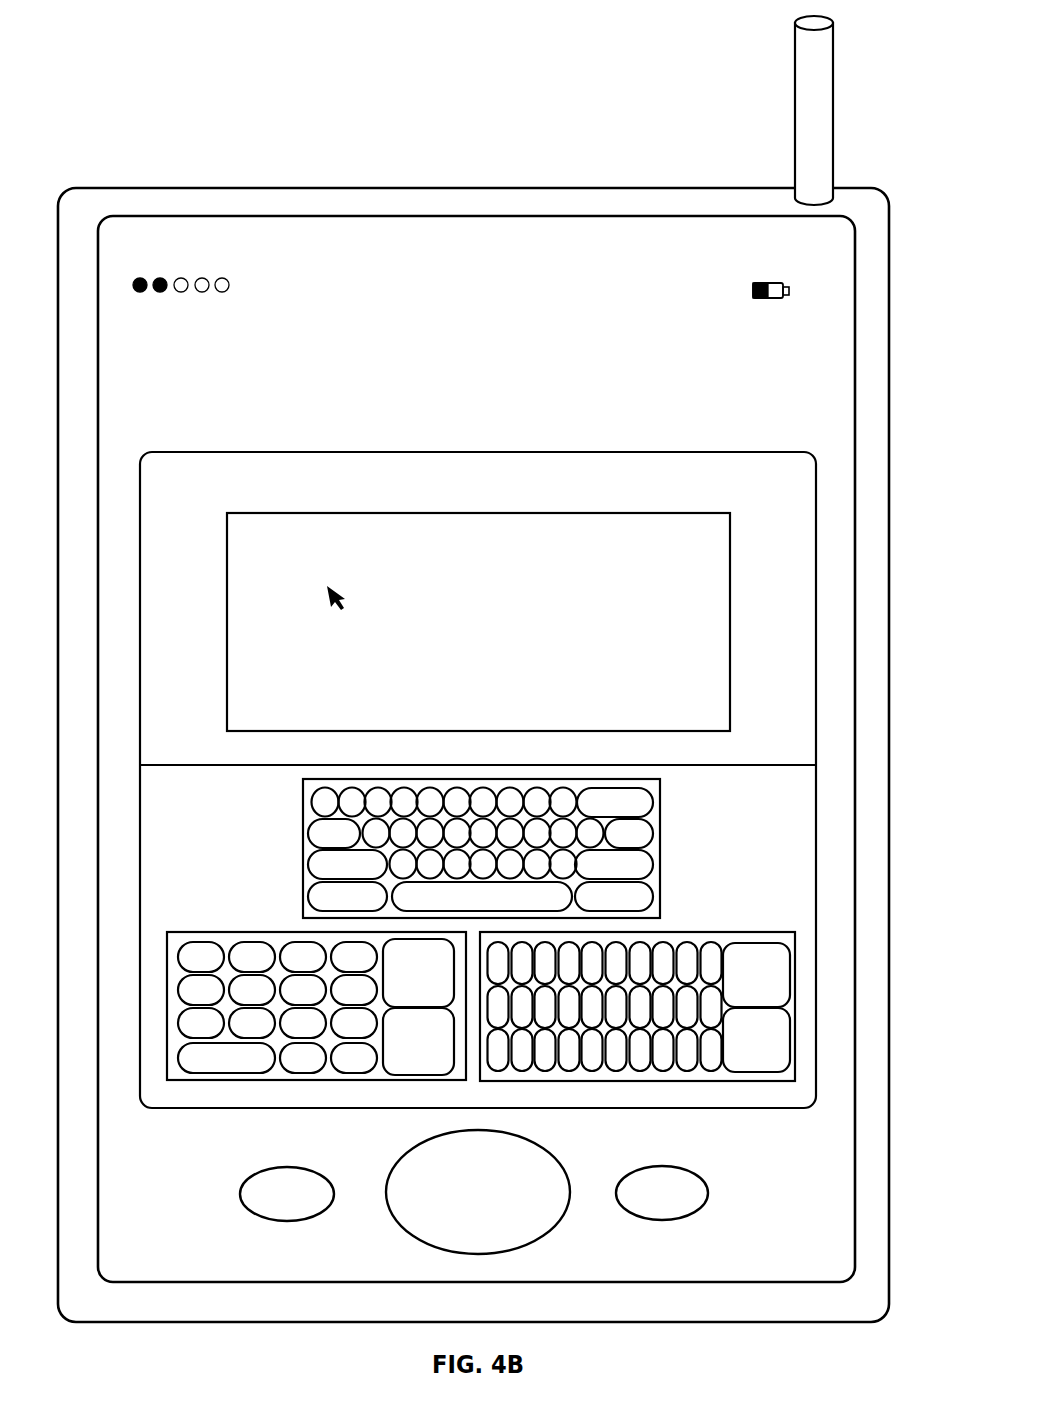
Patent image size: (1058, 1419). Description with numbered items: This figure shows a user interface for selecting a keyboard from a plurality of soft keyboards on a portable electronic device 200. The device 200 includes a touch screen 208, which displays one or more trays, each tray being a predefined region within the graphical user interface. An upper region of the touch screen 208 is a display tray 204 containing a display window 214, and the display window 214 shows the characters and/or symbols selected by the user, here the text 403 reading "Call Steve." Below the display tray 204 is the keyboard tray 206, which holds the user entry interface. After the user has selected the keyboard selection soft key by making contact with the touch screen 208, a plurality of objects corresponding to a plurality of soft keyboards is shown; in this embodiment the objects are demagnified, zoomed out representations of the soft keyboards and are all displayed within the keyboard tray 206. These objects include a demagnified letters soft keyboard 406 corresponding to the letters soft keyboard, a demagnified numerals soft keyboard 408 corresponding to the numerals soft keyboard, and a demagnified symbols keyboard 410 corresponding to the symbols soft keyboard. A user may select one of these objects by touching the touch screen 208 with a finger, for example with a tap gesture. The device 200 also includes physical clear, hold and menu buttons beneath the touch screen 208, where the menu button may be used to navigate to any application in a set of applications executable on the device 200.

The portable electronic device 200 is at (720, 140).
The touch screen 208 is at (797, 426).
The display tray 204 is at (749, 499).
The display window 214 is at (685, 721).
The text 403 is at (339, 606).
The keyboard tray 206 is at (777, 804).
The demagnified letters soft keyboard 406 is at (303, 797).
The demagnified numerals soft keyboard 408 is at (303, 1082).
The demagnified symbols keyboard 410 is at (653, 1082).